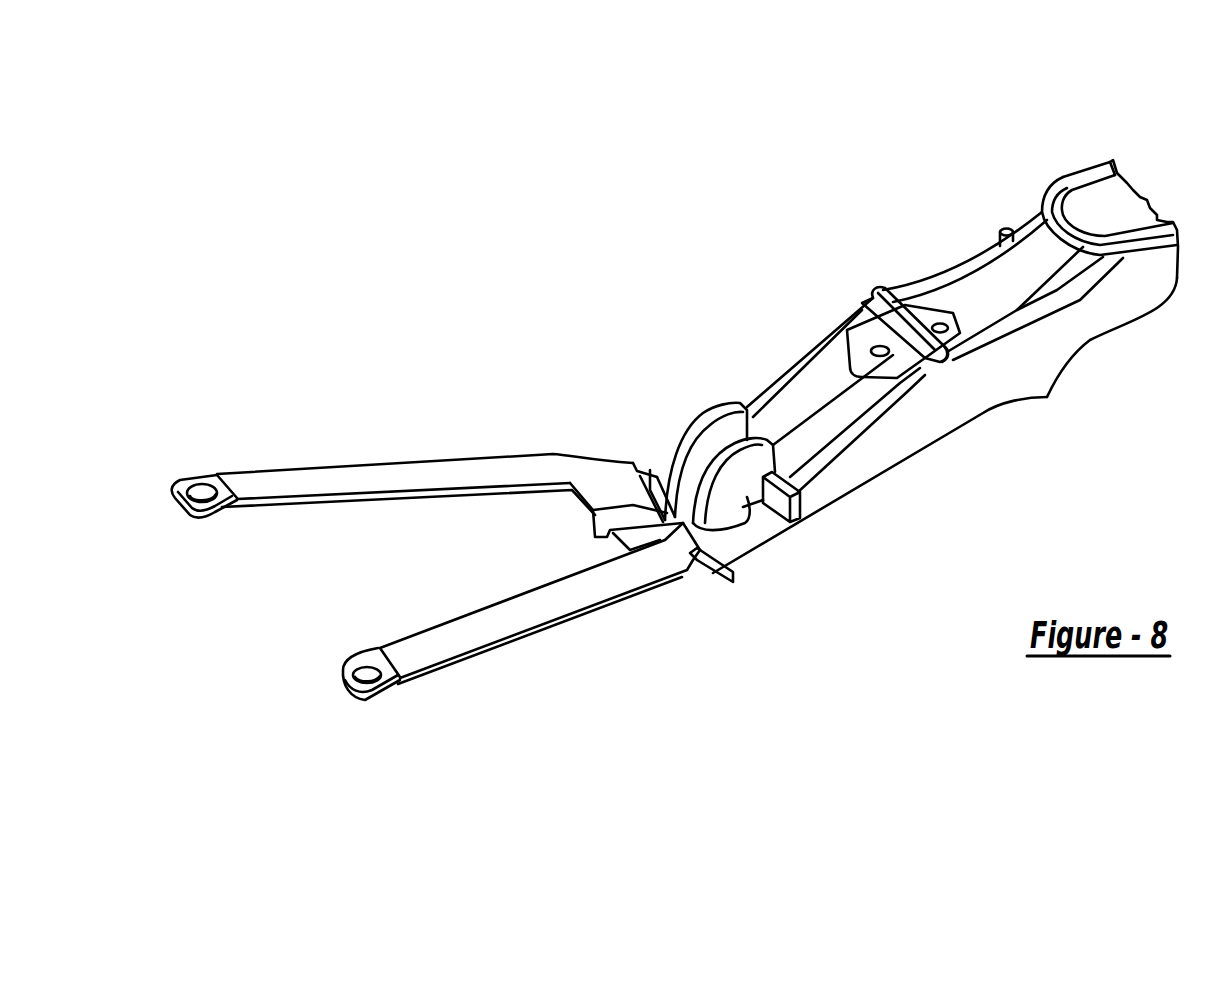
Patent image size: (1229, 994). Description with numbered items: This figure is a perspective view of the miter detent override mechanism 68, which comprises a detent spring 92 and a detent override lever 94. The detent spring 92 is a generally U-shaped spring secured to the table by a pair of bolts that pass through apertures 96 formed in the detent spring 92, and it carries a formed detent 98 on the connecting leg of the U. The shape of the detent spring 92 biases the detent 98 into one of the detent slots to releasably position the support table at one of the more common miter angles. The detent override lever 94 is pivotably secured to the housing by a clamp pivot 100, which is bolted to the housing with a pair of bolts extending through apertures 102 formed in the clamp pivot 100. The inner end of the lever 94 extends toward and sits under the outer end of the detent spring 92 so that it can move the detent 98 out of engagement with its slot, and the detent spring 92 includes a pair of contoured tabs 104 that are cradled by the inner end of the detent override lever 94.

The miter detent override mechanism 68 is at (962, 92).
The detent spring 92 is at (525, 616).
The detent override lever 94 is at (1033, 373).
The apertures 96 is at (175, 485).
The detent 98 is at (607, 537).
The clamp pivot 100 is at (865, 340).
The apertures 102 is at (945, 328).
The contoured tabs 104 is at (735, 540).